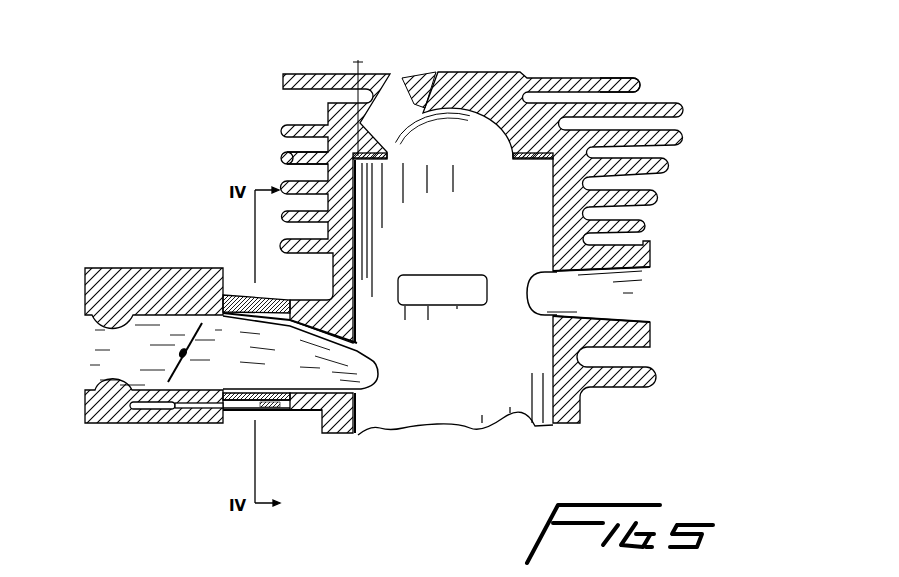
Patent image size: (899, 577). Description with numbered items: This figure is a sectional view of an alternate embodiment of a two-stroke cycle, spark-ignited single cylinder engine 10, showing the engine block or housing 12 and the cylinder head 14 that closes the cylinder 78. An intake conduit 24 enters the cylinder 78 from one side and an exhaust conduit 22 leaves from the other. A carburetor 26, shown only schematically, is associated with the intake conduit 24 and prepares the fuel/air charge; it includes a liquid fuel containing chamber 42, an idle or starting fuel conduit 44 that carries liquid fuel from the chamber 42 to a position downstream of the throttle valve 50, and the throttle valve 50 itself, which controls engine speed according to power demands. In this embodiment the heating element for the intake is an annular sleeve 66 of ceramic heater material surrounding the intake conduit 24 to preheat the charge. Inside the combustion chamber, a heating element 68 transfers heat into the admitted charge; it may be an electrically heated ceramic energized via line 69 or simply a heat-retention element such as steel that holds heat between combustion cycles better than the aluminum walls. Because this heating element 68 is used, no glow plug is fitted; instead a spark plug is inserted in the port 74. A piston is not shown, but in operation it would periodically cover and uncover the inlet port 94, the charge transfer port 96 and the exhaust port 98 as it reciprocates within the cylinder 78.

The engine 10 is at (672, 257).
The engine block 12 is at (577, 412).
The cylinder head 14 is at (673, 102).
The exhaust conduit 22 is at (653, 348).
The intake conduit 24 is at (240, 297).
The carburetor 26 is at (122, 272).
The liquid fuel containing chamber 42 is at (138, 423).
The idle fuel conduit 44 is at (200, 420).
The throttle valve 50 is at (167, 373).
The annular sleeve 66 is at (285, 413).
The heating element 68 is at (380, 193).
The line 69 is at (282, 152).
The port 74 is at (418, 100).
The cylinder 78 is at (365, 417).
The inlet port 94 is at (378, 367).
The charge transfer port 96 is at (465, 275).
The exhaust port 98 is at (528, 315).